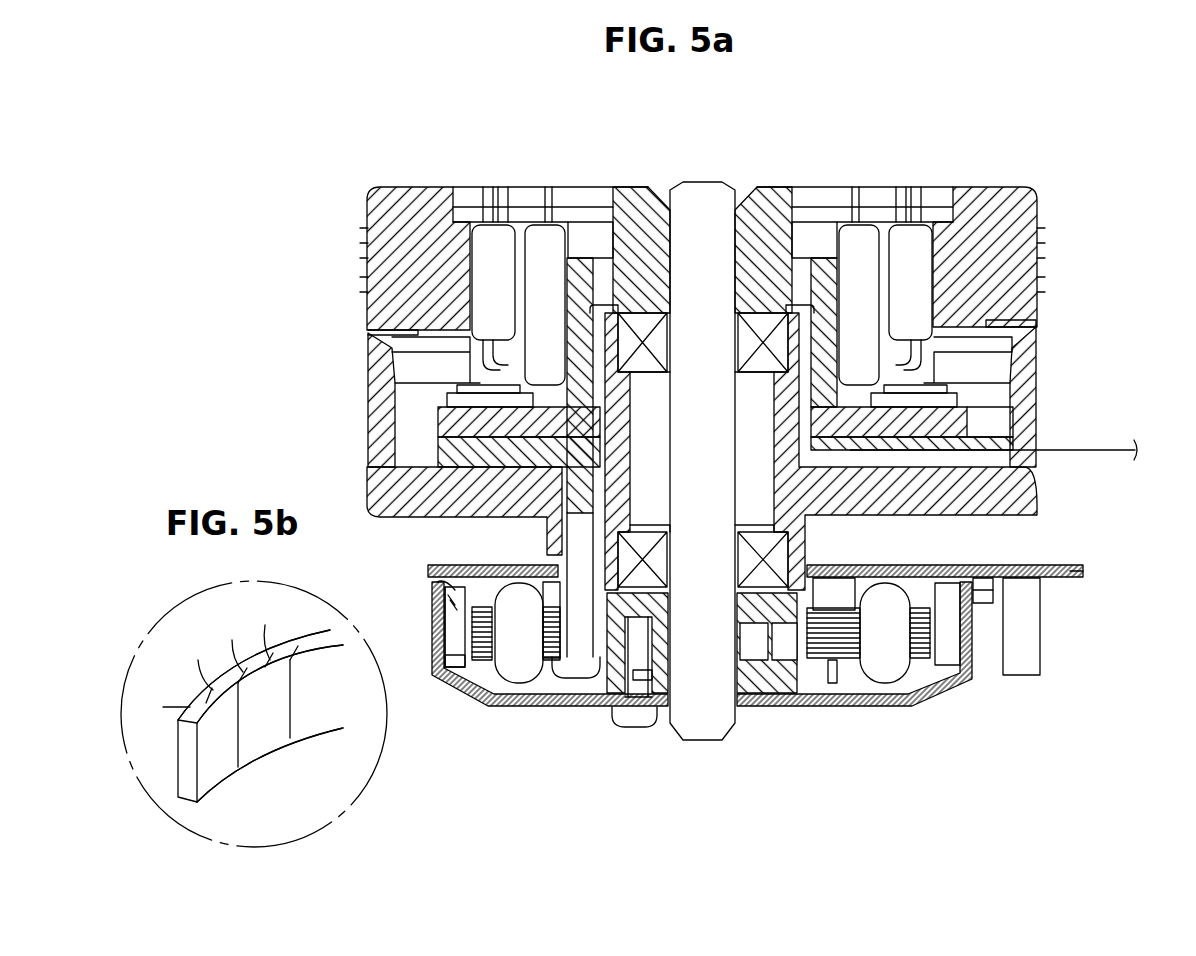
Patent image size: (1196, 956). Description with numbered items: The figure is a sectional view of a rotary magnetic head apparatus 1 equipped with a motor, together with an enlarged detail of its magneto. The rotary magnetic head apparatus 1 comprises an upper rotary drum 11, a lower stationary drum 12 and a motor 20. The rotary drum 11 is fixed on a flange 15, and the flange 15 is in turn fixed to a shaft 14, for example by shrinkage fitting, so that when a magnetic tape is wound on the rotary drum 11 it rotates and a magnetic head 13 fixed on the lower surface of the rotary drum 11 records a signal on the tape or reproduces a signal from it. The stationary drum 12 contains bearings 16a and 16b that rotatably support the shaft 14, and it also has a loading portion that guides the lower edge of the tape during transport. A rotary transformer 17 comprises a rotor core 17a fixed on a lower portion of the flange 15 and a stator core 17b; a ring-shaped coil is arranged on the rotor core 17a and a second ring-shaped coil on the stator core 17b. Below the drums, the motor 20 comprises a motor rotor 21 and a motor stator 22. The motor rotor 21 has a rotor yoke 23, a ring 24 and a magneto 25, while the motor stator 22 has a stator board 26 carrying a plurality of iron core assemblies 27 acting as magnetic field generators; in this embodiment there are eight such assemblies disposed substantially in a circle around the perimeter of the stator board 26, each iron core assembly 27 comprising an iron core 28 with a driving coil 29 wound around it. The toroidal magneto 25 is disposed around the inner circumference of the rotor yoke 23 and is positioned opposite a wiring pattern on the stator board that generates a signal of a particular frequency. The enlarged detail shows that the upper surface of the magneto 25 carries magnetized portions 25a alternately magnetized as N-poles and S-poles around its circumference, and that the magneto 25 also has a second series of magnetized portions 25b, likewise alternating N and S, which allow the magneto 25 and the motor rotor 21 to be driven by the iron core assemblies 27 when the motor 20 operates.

In FIG. 5a, the rotary magnetic head apparatus 1 is at (918, 132).
In FIG. 5a, the upper rotary drum 11 is at (395, 212).
In FIG. 5a, the lower stationary drum 12 is at (1030, 483).
In FIG. 5a, the magnetic head 13 is at (398, 335).
In FIG. 5a, the shaft 14 is at (697, 230).
In FIG. 5a, the flange 15 is at (775, 230).
In FIG. 5a, the bearing 16a is at (643, 323).
In FIG. 5a, the bearing 16b is at (637, 550).
In FIG. 5a, the rotary transformer 17 is at (812, 411).
In FIG. 5a, the rotor core 17a is at (1000, 410).
In FIG. 5a, the stator core 17b is at (1000, 450).
In FIG. 5a, the motor 20 is at (986, 702).
In FIG. 5a, the motor rotor 21 is at (425, 667).
In FIG. 5a, the motor stator 22 is at (1042, 556).
In FIG. 5a, the rotor yoke 23 is at (757, 708).
In FIG. 5a, the ring 24 is at (543, 600).
In FIG. 5a, the magneto 25 is at (458, 667).
In FIG. 5b, the magneto 25 is at (325, 778).
In FIG. 5a, the magnetized portions 25a is at (445, 586).
In FIG. 5b, the magnetized portions 25a is at (198, 692).
In FIG. 5a, the magnetized portions 25b is at (467, 663).
In FIG. 5b, the magnetized portions 25b is at (205, 772).
In FIG. 5a, the stator board 26 is at (1085, 571).
In FIG. 5a, the iron core assembly 27 is at (851, 675).
In FIG. 5a, the iron core 28 is at (827, 643).
In FIG. 5a, the driving coil 29 is at (888, 665).